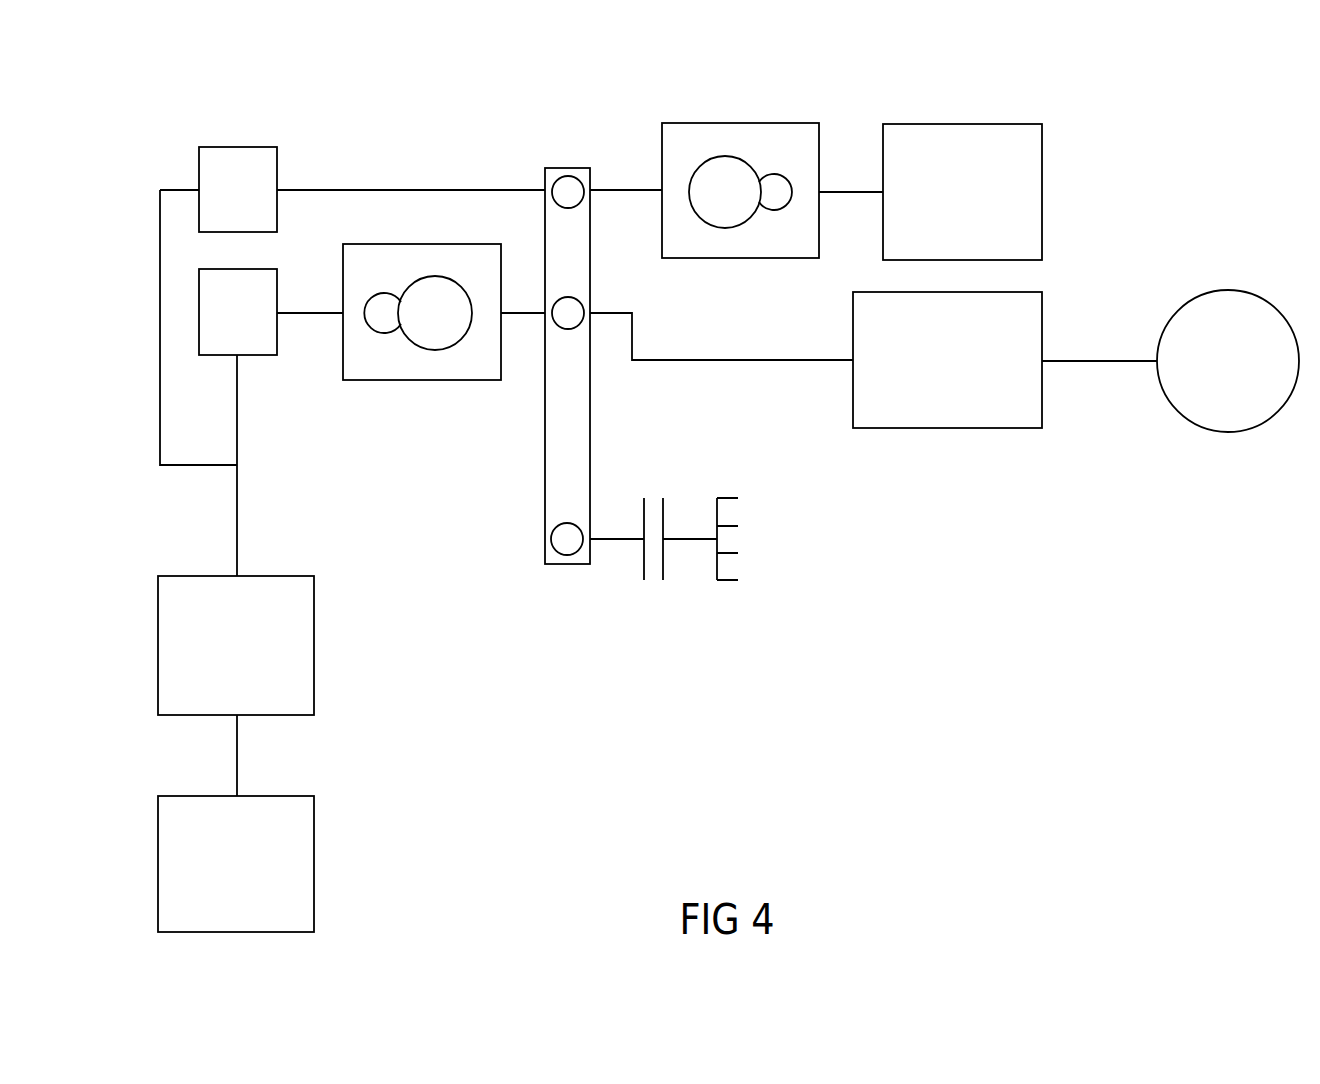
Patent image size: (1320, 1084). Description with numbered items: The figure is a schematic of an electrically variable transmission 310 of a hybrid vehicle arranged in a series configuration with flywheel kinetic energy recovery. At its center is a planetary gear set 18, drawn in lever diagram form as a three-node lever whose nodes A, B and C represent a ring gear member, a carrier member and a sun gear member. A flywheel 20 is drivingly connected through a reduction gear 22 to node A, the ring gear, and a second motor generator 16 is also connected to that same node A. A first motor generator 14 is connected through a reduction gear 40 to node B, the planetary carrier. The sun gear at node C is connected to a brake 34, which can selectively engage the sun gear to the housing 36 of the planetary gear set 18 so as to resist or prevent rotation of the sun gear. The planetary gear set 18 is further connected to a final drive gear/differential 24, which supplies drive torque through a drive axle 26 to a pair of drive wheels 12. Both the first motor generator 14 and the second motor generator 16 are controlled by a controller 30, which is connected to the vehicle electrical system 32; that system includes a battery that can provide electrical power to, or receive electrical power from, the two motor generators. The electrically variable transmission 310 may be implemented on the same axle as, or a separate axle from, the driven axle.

The drive wheels 12 is at (1216, 369).
The first motor generator 14 is at (226, 322).
The second motor generator 16 is at (226, 199).
The planetary gear set 18 is at (564, 163).
The flywheel 20 is at (950, 201).
The reduction gear 22 is at (713, 201).
The final drive gear/differential 24 is at (935, 369).
The drive axle 26 is at (1101, 360).
The controller 30 is at (224, 652).
The vehicle electrical system 32 is at (224, 866).
The brake 34 is at (658, 588).
The housing 36 is at (730, 553).
The reduction gear 40 is at (424, 322).
The electrically variable transmission 310 is at (1074, 168).